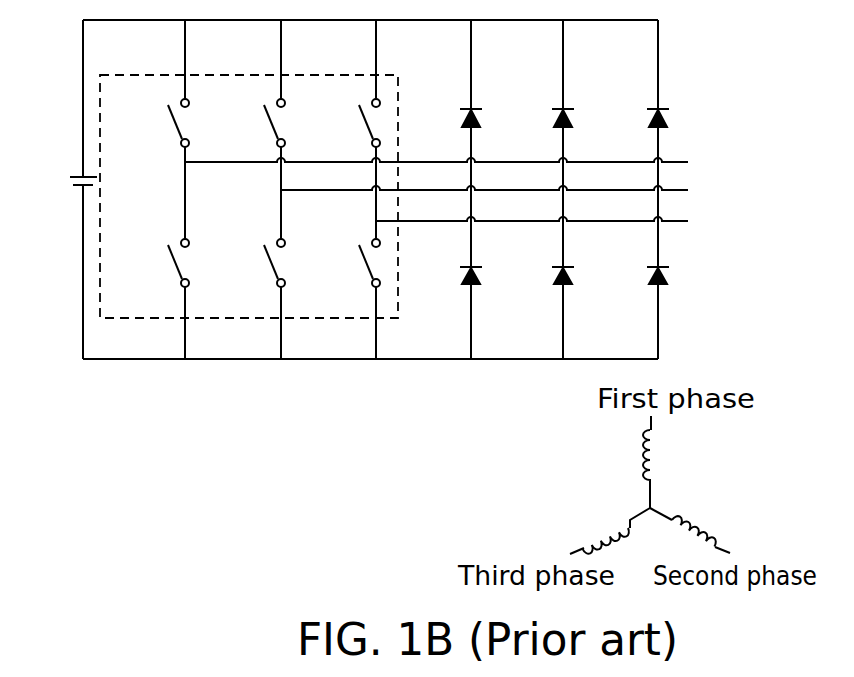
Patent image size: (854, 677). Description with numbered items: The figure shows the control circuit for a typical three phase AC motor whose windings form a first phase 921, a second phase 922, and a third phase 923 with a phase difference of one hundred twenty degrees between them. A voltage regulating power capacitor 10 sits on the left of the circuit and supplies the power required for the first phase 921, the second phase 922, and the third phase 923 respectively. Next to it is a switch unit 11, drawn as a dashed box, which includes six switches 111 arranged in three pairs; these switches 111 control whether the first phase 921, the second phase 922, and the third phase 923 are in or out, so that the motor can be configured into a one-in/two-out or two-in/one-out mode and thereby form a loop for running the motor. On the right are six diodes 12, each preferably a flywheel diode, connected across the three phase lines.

The voltage regulating power capacitor 10 is at (72, 179).
The switch unit 11 is at (316, 75).
The switch 111 is at (363, 261).
The diode 12 is at (462, 120).
The first phase 921 is at (459, 155).
The second phase 922 is at (507, 188).
The third phase 923 is at (554, 219).